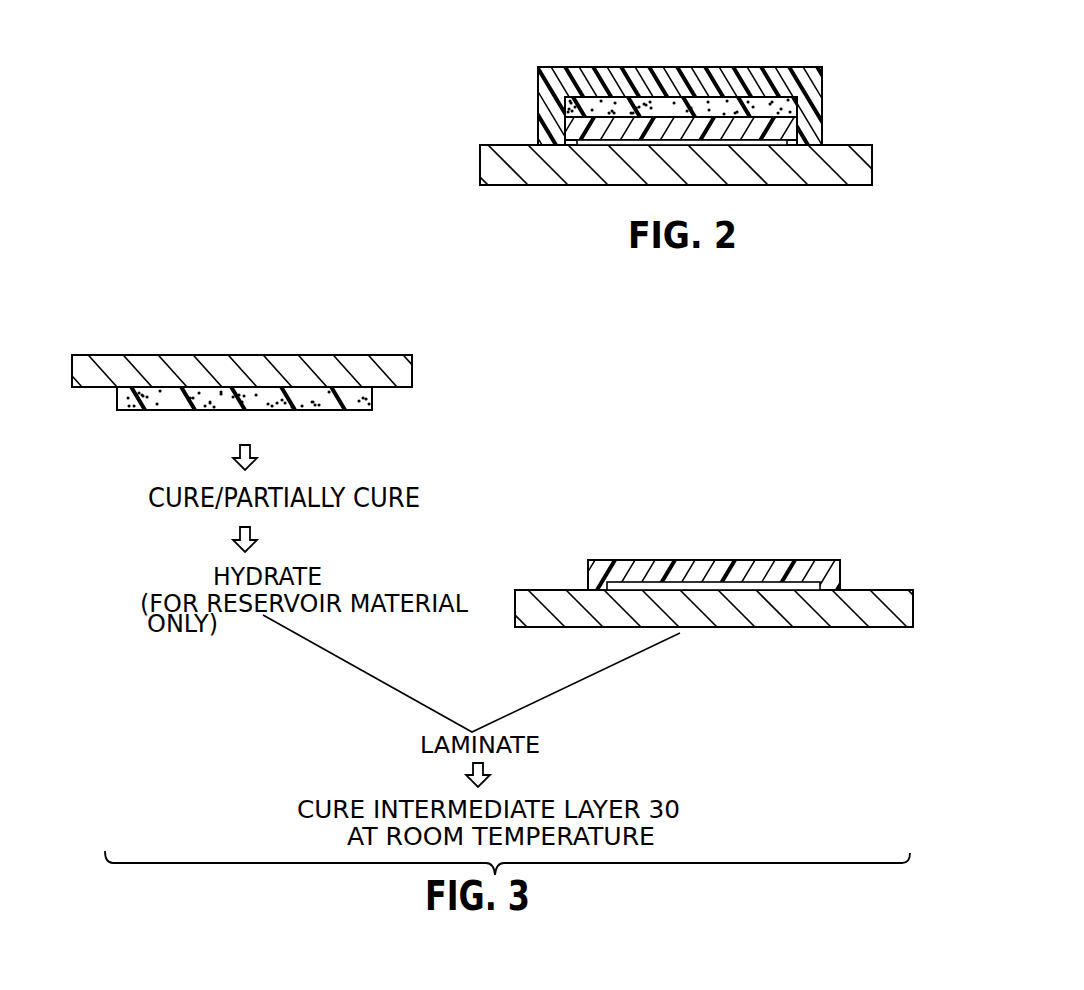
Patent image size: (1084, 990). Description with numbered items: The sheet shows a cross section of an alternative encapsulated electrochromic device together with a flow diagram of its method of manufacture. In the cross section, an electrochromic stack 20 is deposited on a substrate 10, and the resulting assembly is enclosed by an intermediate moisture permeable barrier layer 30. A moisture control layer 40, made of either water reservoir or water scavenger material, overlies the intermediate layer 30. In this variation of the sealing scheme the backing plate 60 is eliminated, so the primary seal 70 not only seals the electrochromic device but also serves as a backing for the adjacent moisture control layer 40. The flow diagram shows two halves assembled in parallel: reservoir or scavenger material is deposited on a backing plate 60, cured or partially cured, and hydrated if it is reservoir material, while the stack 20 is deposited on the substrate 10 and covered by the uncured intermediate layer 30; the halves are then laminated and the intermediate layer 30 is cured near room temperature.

In FIG. 2, the substrate 10 is at (787, 173).
In FIG. 3, the substrate 10 is at (873, 594).
In FIG. 2, the electrochromic stack 20 is at (616, 146).
In FIG. 3, the electrochromic stack 20 is at (782, 584).
In FIG. 2, the intermediate layer 30 is at (786, 129).
In FIG. 3, the intermediate layer 30 is at (710, 568).
In FIG. 2, the moisture control layer 40 is at (766, 102).
In FIG. 3, the moisture control layer 40 is at (333, 409).
In FIG. 3, the backing plate 60 is at (345, 362).
In FIG. 2, the primary seal 70 is at (606, 72).